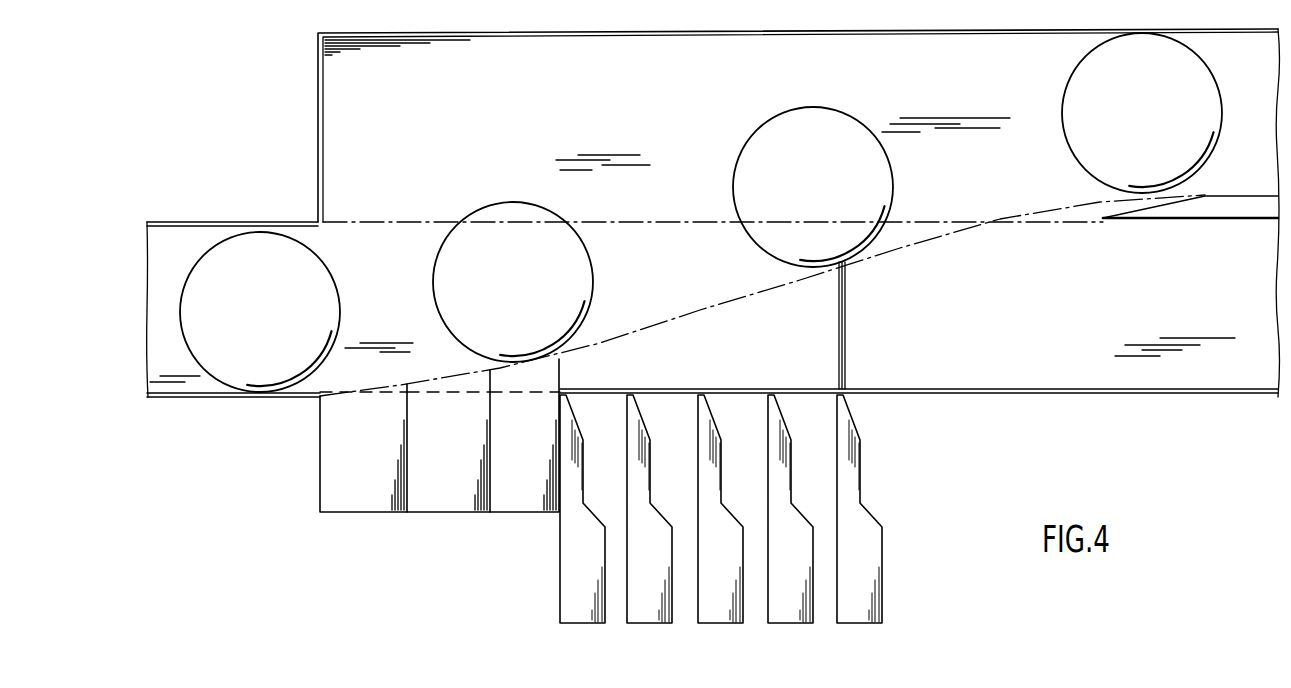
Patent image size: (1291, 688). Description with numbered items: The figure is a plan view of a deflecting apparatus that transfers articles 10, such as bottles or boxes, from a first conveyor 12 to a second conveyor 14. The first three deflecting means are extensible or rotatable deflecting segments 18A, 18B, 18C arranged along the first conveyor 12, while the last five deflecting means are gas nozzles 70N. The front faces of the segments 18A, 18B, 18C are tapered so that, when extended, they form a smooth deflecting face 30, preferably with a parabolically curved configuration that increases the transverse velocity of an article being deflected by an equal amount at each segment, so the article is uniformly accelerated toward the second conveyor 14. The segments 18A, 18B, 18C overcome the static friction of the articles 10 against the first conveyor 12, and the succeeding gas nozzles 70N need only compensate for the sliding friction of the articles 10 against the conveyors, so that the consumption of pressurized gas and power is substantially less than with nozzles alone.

The articles 10 is at (272, 329).
The first conveyor 12 is at (174, 354).
The second conveyor 14 is at (390, 122).
The deflecting segment 18A is at (372, 492).
The deflecting segment 18B is at (457, 492).
The deflecting segment 18C is at (535, 492).
The deflecting face 30 is at (677, 323).
The gas nozzles 70N is at (647, 628).